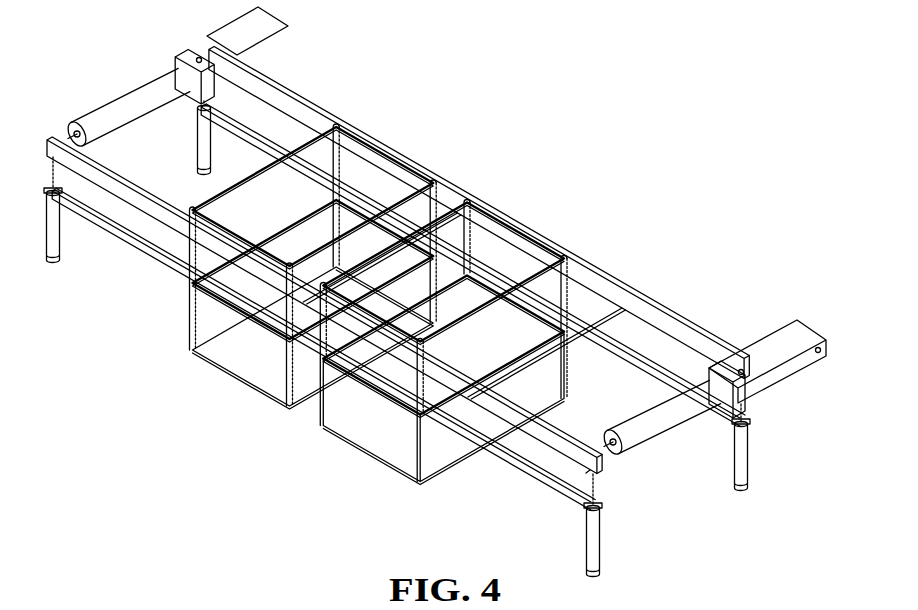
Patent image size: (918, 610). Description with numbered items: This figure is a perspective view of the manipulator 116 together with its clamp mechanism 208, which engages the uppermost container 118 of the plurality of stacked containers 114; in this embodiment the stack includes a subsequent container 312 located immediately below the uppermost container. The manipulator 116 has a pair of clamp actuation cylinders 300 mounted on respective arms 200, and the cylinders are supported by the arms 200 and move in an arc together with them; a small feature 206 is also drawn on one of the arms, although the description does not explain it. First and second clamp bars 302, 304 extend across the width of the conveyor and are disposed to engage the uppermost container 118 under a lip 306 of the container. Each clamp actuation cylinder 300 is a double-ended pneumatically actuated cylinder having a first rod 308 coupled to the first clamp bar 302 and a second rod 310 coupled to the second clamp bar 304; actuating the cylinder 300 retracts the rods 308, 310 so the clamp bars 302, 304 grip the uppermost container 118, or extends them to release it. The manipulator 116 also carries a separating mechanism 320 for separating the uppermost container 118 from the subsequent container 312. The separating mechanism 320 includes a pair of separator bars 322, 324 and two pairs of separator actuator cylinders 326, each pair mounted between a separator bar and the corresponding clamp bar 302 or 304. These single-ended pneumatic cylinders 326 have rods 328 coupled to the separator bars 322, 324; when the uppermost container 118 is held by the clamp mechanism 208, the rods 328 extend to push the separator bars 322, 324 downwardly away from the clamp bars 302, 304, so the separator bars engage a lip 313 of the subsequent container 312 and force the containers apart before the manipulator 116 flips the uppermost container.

The plurality of stacked containers 114 is at (259, 272).
The manipulator 116 is at (543, 146).
The uppermost container 118 is at (129, 368).
The arm 200 is at (260, 22).
The mounting hole 206 is at (820, 355).
The clamp mechanism 208 is at (143, 60).
The clamp actuation cylinder 300 is at (120, 105).
The first clamp bar 302 is at (668, 315).
The second clamp bar 304 is at (587, 443).
The lip 306 is at (243, 246).
The first rod 308 is at (196, 57).
The second rod 310 is at (70, 132).
The subsequent container 312 is at (191, 325).
The lip 313 is at (257, 324).
The separating mechanism 320 is at (430, 339).
The separator bar 322 is at (508, 460).
The separator bar 324 is at (596, 335).
The separator actuator cylinder 326 is at (199, 137).
The rod 328 is at (62, 190).